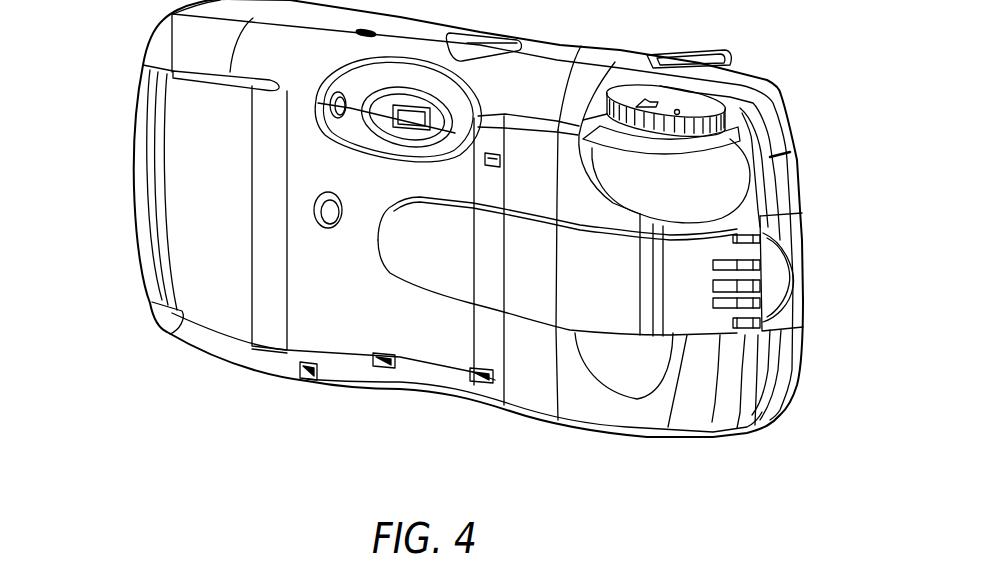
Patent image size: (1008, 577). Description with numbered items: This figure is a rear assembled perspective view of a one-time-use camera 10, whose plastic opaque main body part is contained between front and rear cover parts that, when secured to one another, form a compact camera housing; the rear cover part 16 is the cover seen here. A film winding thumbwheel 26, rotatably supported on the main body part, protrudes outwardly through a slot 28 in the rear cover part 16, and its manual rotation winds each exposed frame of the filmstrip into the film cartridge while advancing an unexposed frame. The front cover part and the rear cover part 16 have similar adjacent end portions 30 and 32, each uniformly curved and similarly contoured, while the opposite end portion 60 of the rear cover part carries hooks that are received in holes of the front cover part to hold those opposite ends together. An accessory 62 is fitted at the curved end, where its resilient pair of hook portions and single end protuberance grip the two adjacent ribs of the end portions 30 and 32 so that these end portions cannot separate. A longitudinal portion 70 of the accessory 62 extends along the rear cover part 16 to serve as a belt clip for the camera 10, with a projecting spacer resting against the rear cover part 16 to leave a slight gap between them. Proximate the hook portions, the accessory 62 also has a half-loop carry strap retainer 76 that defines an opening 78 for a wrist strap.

The one-time-use camera 10 is at (776, 441).
The rear cover part 16 is at (527, 395).
The film winding thumbwheel 26 is at (722, 106).
The slot 28 is at (677, 109).
The end portion of the front cover part 30 is at (789, 131).
The end portion of the rear cover part 32 is at (774, 176).
The opposite end portion of the rear cover part 60 is at (133, 148).
The accessory 62 is at (575, 336).
The longitudinal portion 70 is at (435, 263).
The half-loop carry strap retainer 76 is at (791, 298).
The opening 78 is at (781, 268).